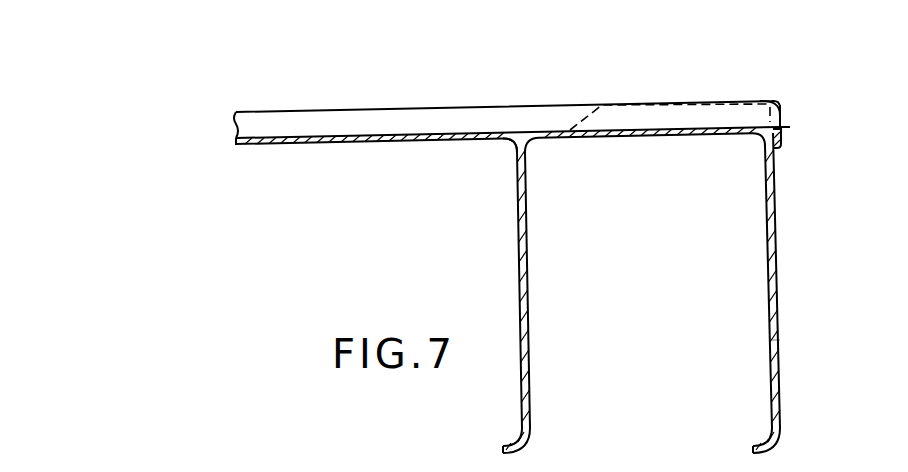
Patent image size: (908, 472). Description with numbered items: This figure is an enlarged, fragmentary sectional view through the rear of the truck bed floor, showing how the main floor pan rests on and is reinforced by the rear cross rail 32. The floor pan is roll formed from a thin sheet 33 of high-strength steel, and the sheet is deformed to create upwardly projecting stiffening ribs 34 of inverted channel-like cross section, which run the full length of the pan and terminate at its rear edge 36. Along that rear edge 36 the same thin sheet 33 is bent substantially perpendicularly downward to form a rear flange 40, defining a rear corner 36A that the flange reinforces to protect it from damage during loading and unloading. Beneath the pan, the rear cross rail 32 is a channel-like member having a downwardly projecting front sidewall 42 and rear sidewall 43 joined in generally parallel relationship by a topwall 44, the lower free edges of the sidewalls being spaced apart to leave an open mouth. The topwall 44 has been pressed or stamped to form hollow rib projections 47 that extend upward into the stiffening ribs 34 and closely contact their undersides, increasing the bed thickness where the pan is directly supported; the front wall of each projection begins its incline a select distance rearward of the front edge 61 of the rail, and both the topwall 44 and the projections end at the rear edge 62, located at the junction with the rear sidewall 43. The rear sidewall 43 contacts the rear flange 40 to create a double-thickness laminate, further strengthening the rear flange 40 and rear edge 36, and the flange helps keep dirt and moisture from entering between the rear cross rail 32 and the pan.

The rear cross rail 32 is at (780, 343).
The thin sheet 33 is at (352, 145).
The stiffening ribs 34 is at (385, 108).
The rear edge 36 is at (770, 100).
The rear corner 36A is at (785, 97).
The rear flange 40 is at (783, 143).
The front sidewall 42 is at (518, 247).
The rear sidewall 43 is at (767, 240).
The topwall 44 is at (652, 140).
The rib projections 47 is at (638, 106).
The front edge 61 is at (507, 145).
The rear edge 62 is at (790, 127).